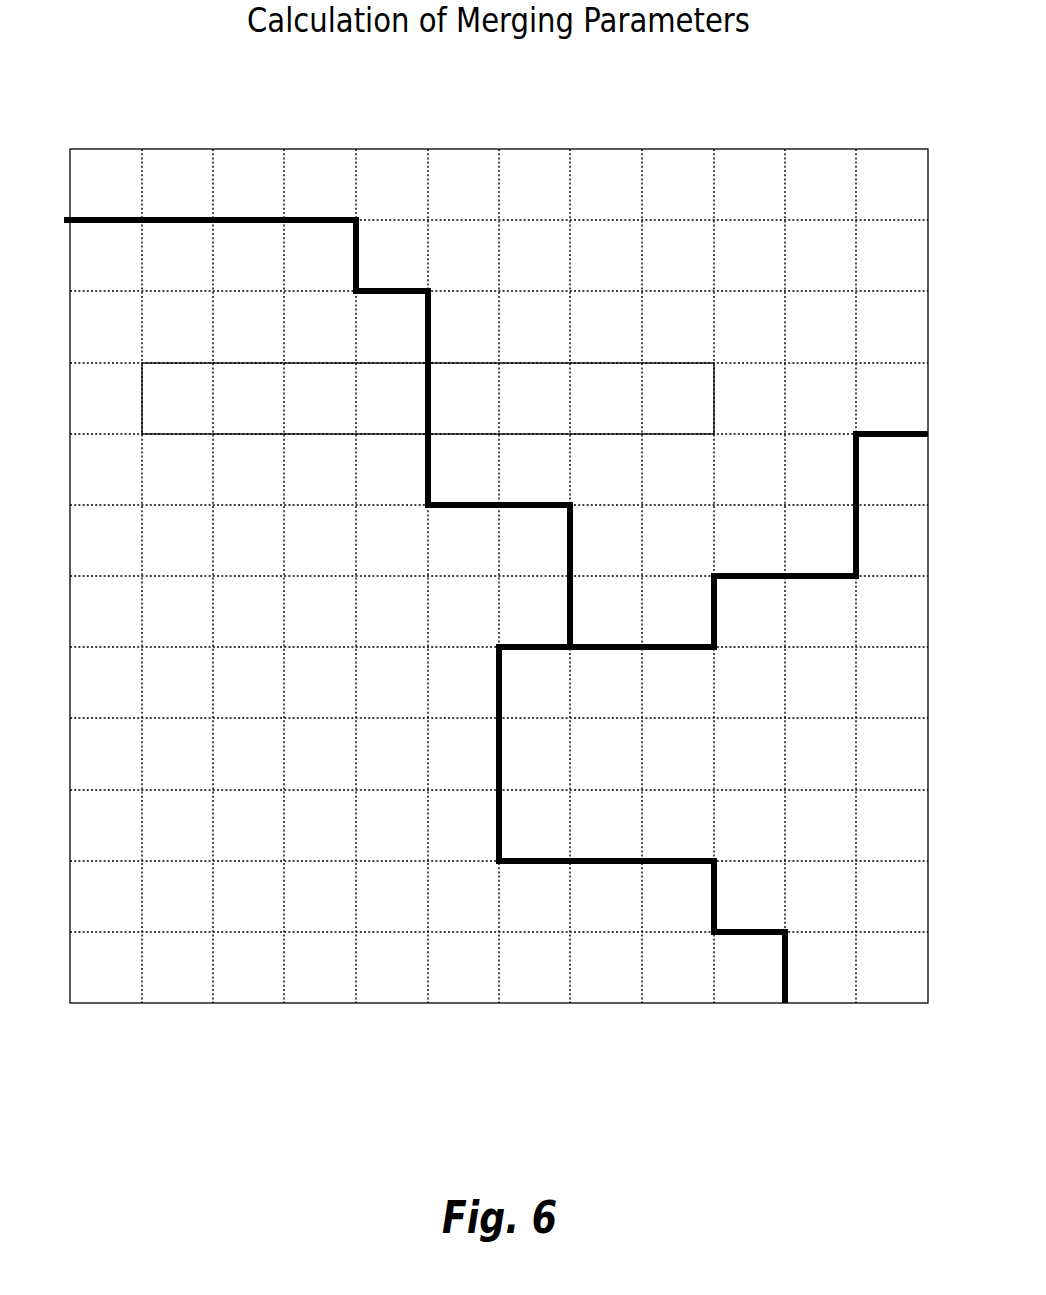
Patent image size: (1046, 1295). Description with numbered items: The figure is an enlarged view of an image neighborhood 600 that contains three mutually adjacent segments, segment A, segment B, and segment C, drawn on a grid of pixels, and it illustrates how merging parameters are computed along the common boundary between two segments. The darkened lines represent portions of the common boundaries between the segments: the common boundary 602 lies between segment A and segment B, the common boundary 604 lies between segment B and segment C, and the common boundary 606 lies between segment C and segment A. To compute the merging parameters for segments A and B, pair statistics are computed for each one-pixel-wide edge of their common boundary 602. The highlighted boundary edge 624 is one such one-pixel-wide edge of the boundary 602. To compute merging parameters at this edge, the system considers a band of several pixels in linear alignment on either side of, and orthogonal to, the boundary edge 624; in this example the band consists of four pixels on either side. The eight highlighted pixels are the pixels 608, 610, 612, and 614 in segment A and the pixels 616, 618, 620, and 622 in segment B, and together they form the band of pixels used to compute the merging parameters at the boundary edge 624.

The image neighborhood 600 is at (247, 1010).
The common boundary between segment A and segment B 602 is at (358, 275).
The common boundary between segment B and segment C 604 is at (733, 575).
The common boundary between segment C and segment A 606 is at (716, 914).
The highlighted pixel in segment A 608 is at (177, 398).
The highlighted pixel in segment A 610 is at (248, 398).
The highlighted pixel in segment A 612 is at (320, 398).
The highlighted pixel in segment A 614 is at (392, 398).
The highlighted pixel in segment B 616 is at (463, 398).
The highlighted pixel in segment B 618 is at (534, 398).
The highlighted pixel in segment B 620 is at (606, 398).
The highlighted pixel in segment B 622 is at (678, 398).
The boundary edge 624 is at (432, 382).